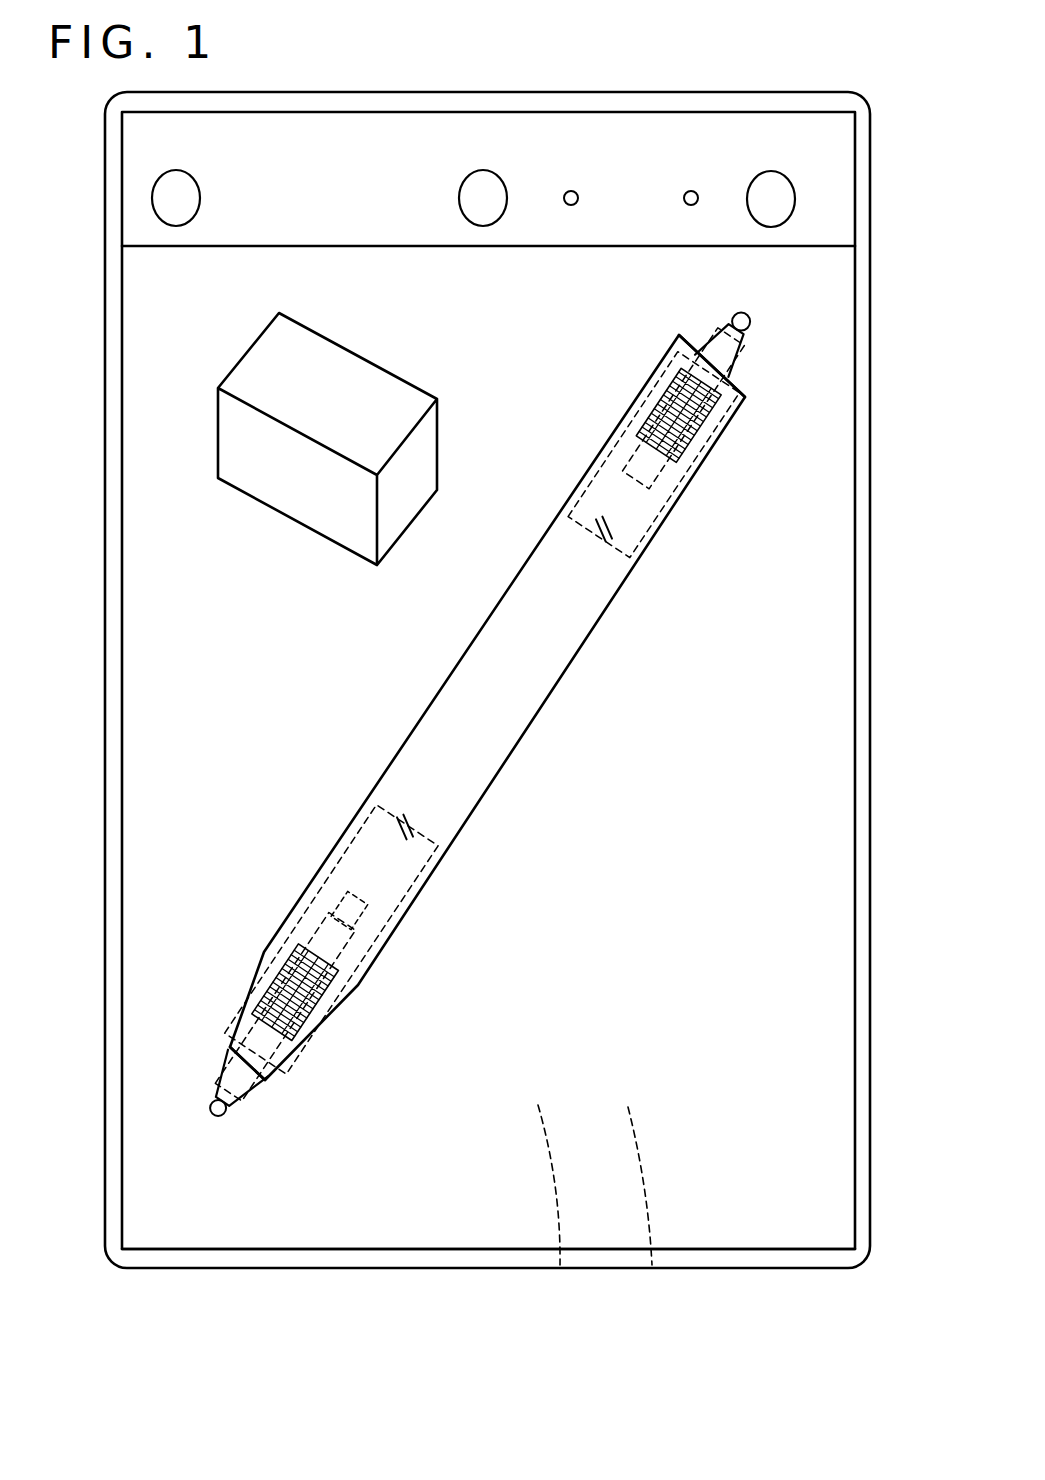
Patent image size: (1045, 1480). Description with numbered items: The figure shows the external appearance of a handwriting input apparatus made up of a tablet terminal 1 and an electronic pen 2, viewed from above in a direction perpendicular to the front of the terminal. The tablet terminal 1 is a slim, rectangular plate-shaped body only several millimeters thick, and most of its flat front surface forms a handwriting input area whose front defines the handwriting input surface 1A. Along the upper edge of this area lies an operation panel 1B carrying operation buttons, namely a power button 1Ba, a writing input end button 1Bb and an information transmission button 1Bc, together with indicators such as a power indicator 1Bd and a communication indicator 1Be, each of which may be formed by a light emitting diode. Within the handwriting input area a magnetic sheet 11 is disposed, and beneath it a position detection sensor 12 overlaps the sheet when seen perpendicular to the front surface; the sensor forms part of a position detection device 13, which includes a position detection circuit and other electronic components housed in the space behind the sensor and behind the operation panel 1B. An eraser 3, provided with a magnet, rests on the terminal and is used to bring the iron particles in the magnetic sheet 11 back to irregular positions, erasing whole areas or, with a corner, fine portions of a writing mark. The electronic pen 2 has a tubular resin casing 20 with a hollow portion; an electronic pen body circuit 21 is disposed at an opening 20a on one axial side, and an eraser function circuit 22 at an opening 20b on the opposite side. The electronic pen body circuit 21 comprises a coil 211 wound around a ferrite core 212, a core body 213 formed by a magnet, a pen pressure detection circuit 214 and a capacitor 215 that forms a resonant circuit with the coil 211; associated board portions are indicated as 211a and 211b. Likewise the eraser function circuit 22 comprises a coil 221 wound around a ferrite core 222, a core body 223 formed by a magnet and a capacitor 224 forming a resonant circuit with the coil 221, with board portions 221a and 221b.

The tablet terminal 1 is at (189, 93).
The handwriting input surface 1A is at (210, 1217).
The operation panel 1B is at (532, 137).
The power button 1Ba is at (782, 202).
The writing input end button 1Bb is at (475, 177).
The information transmission button 1Bc is at (160, 198).
The power indicator 1Bd is at (690, 188).
The communication indicator 1Be is at (572, 187).
The electronic pen 2 is at (518, 738).
The eraser 3 is at (364, 390).
The magnetic sheet 11 is at (340, 1165).
The position detection sensor 12 is at (652, 1268).
The position detection device 13 is at (560, 1268).
The tubular casing 20 is at (522, 570).
The opening 20a is at (262, 1080).
The opening 20b is at (693, 345).
The electronic pen body circuit 21 is at (328, 744).
The coil 211 is at (290, 960).
The board 211a is at (320, 888).
The board 211b is at (383, 932).
The ferrite core 212 is at (227, 1073).
The core body 213 is at (217, 1102).
The pen pressure detection circuit 214 is at (353, 877).
The capacitor 215 is at (402, 813).
The eraser function circuit 22 is at (818, 392).
The coil 221 is at (698, 441).
The board 221a is at (617, 447).
The board 221b is at (648, 523).
The ferrite core 222 is at (738, 370).
The core body 223 is at (750, 327).
The capacitor 224 is at (610, 543).